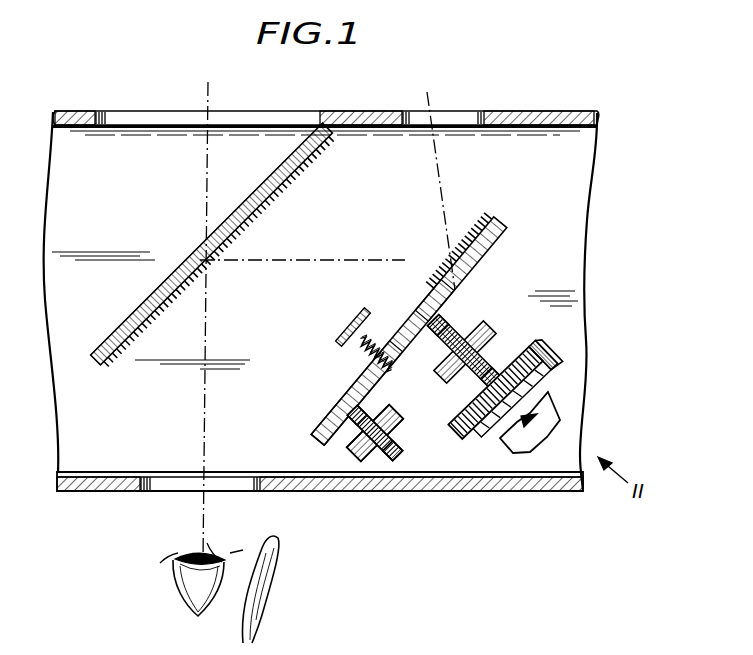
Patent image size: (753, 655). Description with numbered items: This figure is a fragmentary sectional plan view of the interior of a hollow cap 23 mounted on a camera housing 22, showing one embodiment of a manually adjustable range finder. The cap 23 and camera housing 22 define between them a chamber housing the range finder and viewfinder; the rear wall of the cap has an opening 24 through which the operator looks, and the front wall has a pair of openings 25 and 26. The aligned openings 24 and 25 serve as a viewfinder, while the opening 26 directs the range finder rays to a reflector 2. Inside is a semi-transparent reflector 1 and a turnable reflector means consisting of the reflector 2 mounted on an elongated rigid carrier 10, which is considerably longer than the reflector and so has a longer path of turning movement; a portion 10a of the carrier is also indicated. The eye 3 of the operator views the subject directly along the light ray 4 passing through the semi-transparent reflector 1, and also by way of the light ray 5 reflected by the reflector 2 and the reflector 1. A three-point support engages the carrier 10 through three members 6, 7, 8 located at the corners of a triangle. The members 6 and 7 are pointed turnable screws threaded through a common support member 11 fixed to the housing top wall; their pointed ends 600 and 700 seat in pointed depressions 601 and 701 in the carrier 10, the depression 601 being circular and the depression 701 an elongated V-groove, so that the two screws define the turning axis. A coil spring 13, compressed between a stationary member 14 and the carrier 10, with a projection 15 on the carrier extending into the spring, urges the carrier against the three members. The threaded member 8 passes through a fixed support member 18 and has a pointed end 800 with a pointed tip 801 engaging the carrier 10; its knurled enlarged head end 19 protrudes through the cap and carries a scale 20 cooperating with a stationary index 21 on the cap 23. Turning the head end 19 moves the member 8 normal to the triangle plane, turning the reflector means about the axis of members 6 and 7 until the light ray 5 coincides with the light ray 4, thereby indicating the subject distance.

The semi-transparent reflector 1 is at (250, 222).
The reflector 2 is at (490, 222).
The eye 3 is at (186, 604).
The light ray 4 is at (205, 178).
The light ray 5 is at (448, 216).
The screw member 6 is at (389, 458).
The screw member 7 is at (397, 480).
The threaded screw member 8 is at (497, 355).
The elongated carrier 10 is at (501, 226).
The rack portion 10a is at (460, 320).
The common support member 11 is at (358, 456).
The spring means 13 is at (348, 365).
The stationary member 14 is at (347, 320).
The projection 15 is at (371, 393).
The fixed support member 18 is at (448, 390).
The enlarged head end 19 is at (546, 347).
The scale 20 is at (556, 372).
The stationary index 21 is at (542, 412).
The camera housing 22 is at (587, 199).
The hollow cap 23 is at (486, 492).
The opening 24 is at (175, 491).
The opening 25 is at (257, 117).
The opening 26 is at (473, 118).
The pointed end 600 is at (343, 419).
The pointed end 700 is at (326, 433).
The pointed depression 601 is at (345, 406).
The pointed depression 701 is at (332, 418).
The pointed end 800 is at (457, 333).
The pointed tip 801 is at (433, 320).